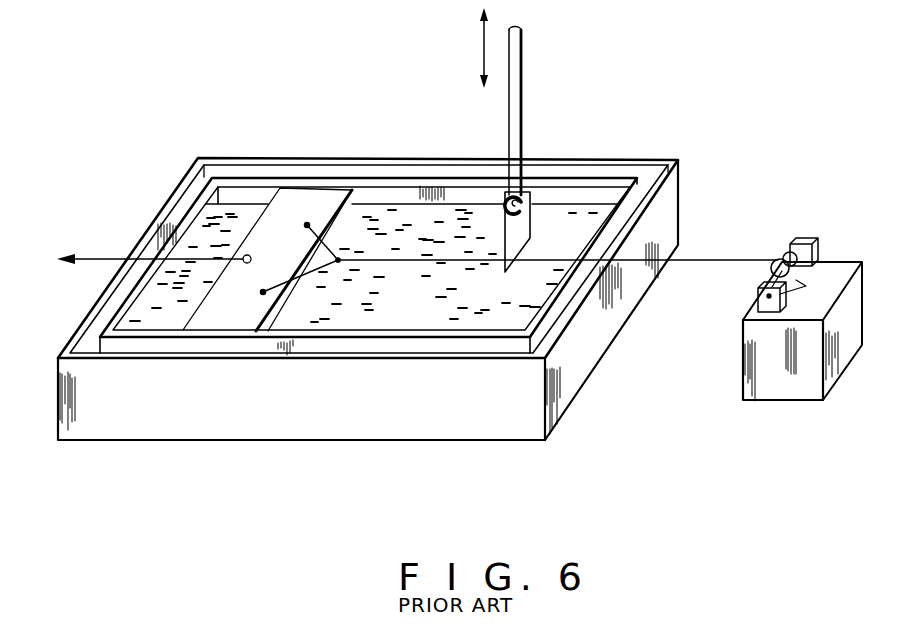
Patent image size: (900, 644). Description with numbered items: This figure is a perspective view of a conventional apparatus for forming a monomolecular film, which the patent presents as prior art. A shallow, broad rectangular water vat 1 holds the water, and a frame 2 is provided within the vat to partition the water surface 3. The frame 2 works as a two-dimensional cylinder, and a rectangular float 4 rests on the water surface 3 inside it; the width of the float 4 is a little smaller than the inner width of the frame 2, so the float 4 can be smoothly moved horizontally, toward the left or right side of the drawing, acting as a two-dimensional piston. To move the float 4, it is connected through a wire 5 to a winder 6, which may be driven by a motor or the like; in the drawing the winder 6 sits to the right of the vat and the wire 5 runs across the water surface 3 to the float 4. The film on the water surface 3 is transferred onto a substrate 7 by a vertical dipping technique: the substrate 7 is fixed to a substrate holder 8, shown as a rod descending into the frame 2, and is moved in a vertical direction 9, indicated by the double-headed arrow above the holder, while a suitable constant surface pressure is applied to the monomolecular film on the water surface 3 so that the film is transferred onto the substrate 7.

The water vat 1 is at (403, 418).
The frame 2 is at (317, 336).
The water surface 3 is at (492, 320).
The float 4 is at (313, 206).
The wire 5 is at (738, 256).
The winder 6 is at (836, 274).
The substrate 7 is at (524, 226).
The substrate holder 8 is at (522, 73).
The vertical direction 9 is at (471, 48).